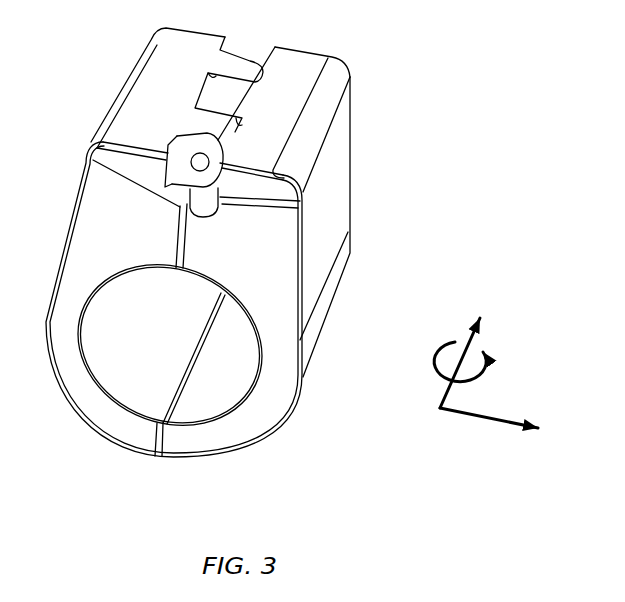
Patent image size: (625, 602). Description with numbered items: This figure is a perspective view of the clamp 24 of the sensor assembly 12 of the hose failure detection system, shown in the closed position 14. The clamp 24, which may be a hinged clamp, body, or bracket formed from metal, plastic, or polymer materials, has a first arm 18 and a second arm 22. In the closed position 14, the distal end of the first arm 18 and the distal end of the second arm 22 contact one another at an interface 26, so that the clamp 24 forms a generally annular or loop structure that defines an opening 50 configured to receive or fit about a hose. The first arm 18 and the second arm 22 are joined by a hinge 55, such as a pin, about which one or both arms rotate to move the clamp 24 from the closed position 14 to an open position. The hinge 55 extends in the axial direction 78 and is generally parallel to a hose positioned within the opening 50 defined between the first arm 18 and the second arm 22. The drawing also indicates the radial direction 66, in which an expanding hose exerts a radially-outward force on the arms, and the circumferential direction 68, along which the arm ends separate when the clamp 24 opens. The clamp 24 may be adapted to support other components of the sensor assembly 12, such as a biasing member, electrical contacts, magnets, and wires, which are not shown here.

The sensor assembly 12 is at (366, 60).
The closed position 14 is at (380, 104).
The clamp 24 is at (367, 172).
The second arm 22 is at (351, 232).
The first arm 18 is at (50, 290).
The opening 50 is at (151, 342).
The interface 26 is at (158, 463).
The hinge 55 is at (199, 153).
The radial direction 66 is at (497, 419).
The circumferential direction 68 is at (484, 358).
The axial direction 78 is at (441, 398).